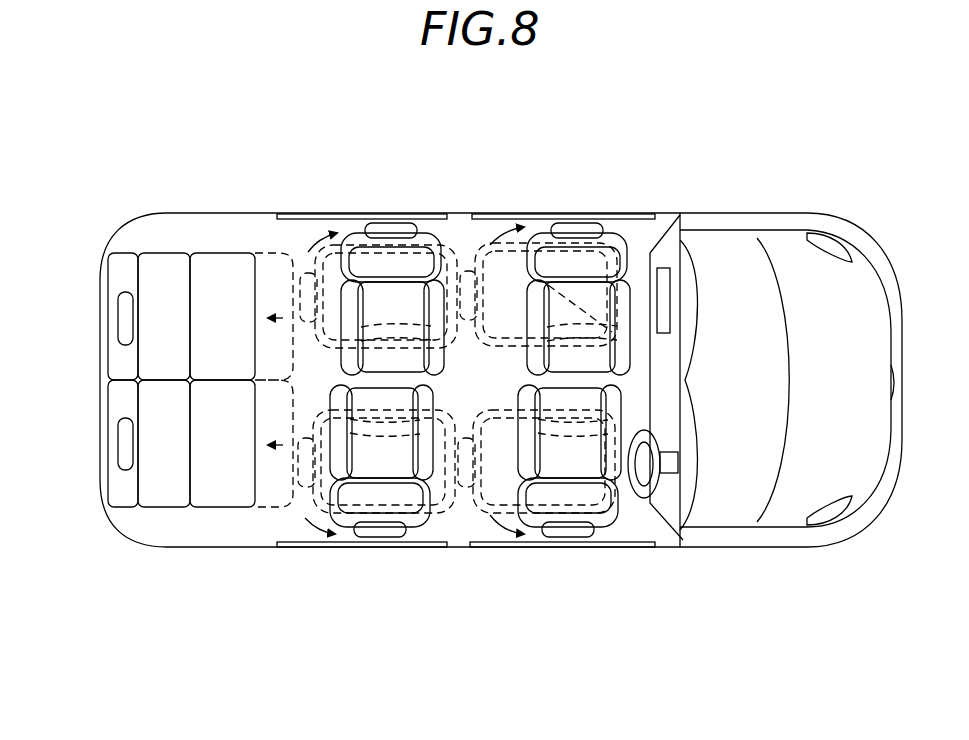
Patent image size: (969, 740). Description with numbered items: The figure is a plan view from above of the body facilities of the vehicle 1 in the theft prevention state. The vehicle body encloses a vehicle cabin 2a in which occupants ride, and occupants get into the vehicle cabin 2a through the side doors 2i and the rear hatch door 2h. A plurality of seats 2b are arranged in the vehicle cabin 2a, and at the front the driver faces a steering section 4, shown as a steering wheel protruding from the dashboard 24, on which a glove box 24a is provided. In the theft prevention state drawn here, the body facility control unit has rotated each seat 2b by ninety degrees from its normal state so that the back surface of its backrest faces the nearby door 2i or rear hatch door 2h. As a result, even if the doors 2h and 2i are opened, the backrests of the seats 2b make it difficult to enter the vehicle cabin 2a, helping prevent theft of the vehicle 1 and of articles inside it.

The vehicle 1 is at (851, 217).
The vehicle cabin 2a is at (312, 232).
The seat 2b is at (227, 253).
The rear hatch door 2h is at (100, 372).
The door 2i is at (342, 214).
The steering section 4 is at (660, 498).
The dashboard 24 is at (666, 252).
The glove box 24a is at (660, 268).